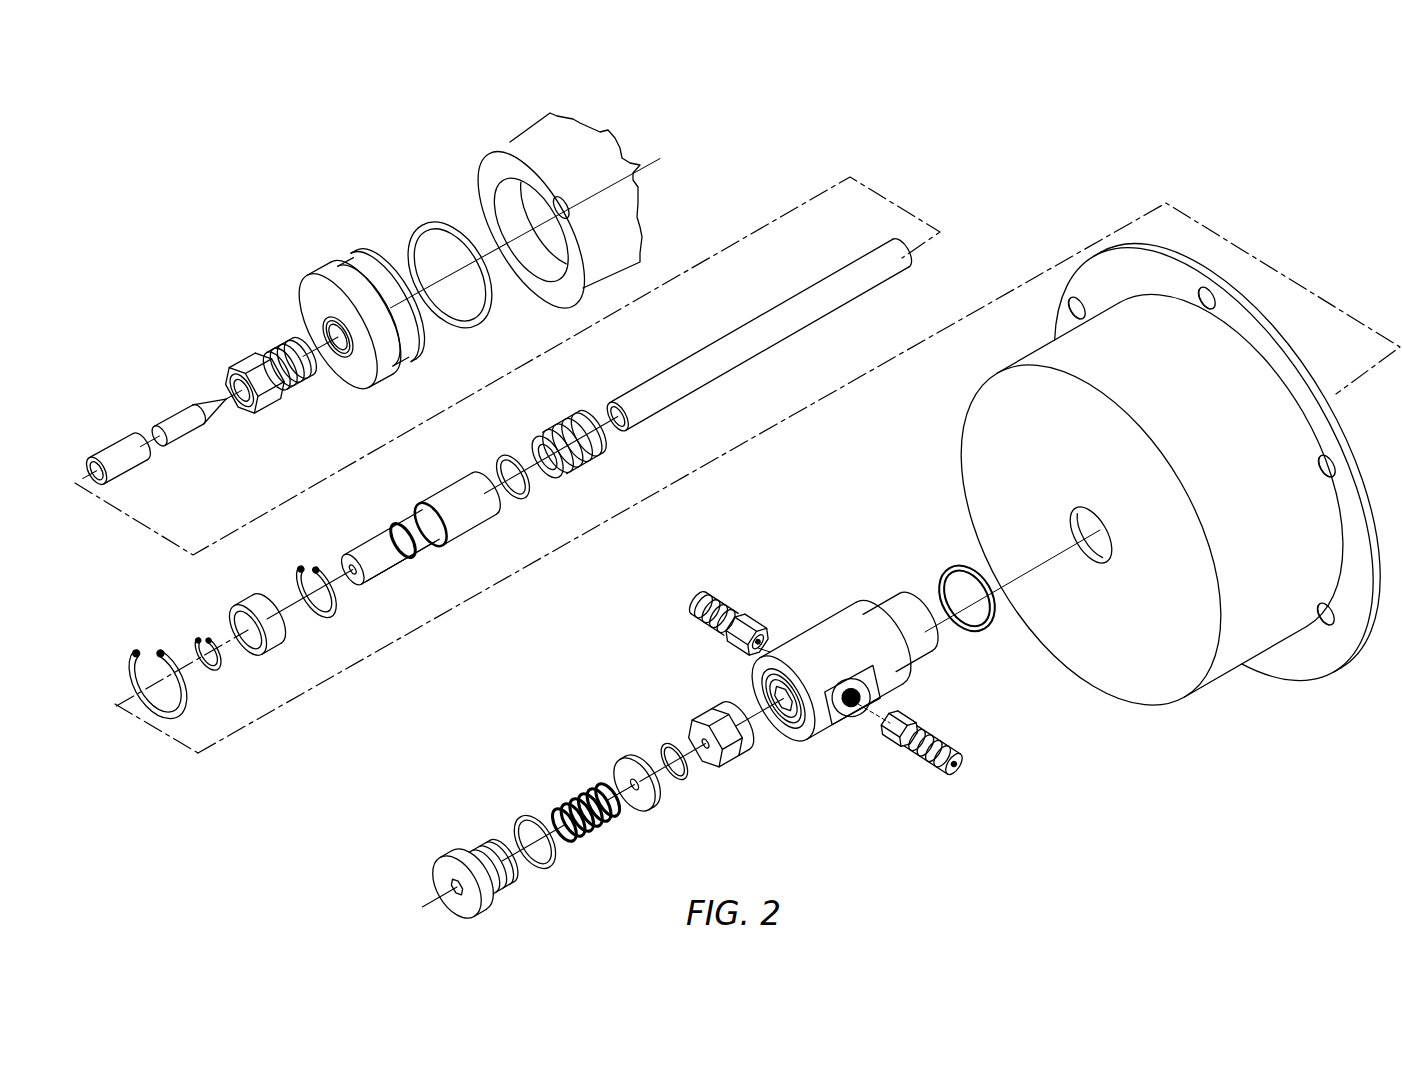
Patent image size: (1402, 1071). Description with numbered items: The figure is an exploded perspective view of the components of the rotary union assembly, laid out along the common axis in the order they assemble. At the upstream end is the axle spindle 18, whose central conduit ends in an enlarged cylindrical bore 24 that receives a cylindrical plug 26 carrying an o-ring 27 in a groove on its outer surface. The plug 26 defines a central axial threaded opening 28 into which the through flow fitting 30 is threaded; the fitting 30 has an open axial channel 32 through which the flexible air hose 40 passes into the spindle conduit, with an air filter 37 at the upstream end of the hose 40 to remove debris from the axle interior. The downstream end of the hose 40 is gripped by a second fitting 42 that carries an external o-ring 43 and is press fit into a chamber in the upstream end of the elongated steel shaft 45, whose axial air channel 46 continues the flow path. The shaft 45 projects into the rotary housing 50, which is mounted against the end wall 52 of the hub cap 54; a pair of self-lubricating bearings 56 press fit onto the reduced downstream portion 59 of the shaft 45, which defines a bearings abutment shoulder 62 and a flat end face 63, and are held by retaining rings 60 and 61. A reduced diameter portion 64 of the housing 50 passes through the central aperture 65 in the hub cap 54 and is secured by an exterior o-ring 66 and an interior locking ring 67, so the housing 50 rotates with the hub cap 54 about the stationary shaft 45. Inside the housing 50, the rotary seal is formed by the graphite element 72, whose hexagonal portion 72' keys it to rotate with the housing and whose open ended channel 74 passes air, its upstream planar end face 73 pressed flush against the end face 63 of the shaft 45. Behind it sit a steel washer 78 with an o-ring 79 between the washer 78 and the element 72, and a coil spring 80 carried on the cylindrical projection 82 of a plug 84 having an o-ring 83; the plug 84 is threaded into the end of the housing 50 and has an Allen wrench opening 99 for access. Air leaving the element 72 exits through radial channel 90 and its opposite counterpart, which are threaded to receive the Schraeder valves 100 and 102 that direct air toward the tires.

The axle spindle 18 is at (520, 133).
The enlarged cylindrical bore 24 is at (512, 202).
The cylindrical plug 26 is at (322, 277).
The o-ring 27 is at (410, 230).
The axial threaded opening 28 is at (326, 340).
The through flow fitting 30 is at (248, 356).
The axial channel 32 is at (242, 398).
The air filter 37 is at (175, 412).
The flexible air hose 40 is at (107, 450).
The second fitting 42 is at (550, 425).
The external o-ring 43 is at (505, 455).
The elongated steel shaft 45 is at (452, 480).
The air channel 46 is at (347, 582).
The rotary housing 50 is at (833, 617).
The end wall 52 is at (1000, 473).
The hub cap 54 is at (1205, 677).
The self-lubricating bearings 56 is at (245, 593).
The downstream portion 59 is at (380, 573).
The retaining ring 60 is at (293, 568).
The retaining ring 61 is at (193, 638).
The bearings abutment shoulder 62 is at (380, 528).
The flat end face 63 is at (342, 560).
The reduced diameter portion 64 is at (885, 610).
The aperture 65 is at (1098, 548).
The exterior o-ring 66 is at (952, 588).
The interior locking ring 67 is at (128, 652).
The graphite element 72 is at (715, 718).
The hexagonal portion 72' is at (750, 757).
The upstream planar end face 73 is at (760, 730).
The open ended channel 74 is at (705, 748).
The steel washer 78 is at (623, 762).
The o-ring 79 is at (670, 745).
The coil spring 80 is at (580, 800).
The cylindrical projection 82 is at (505, 865).
The o-ring 83 is at (525, 817).
The plug 84 is at (472, 847).
The radial channel 90 is at (858, 703).
The Allen wrench opening 99 is at (447, 882).
The Schraeder valve 100 is at (914, 752).
The Schraeder valve 102 is at (743, 620).